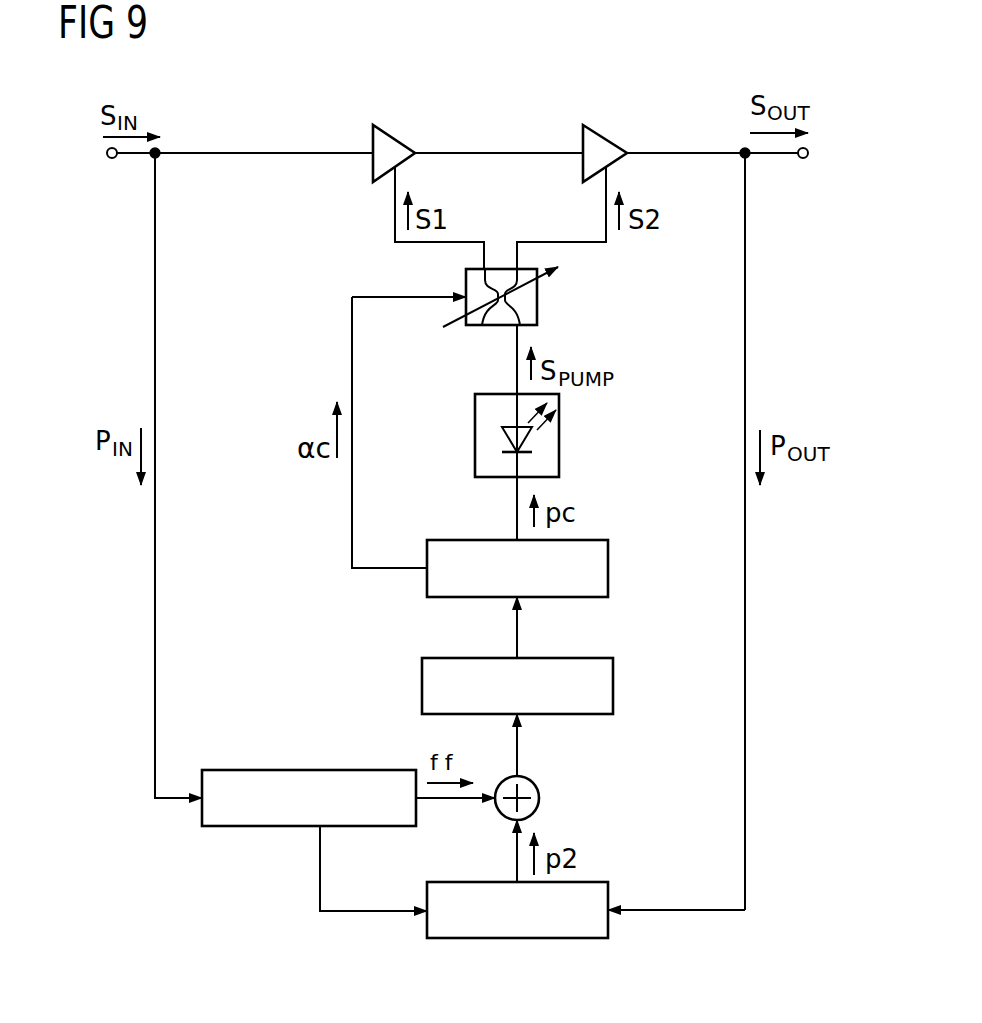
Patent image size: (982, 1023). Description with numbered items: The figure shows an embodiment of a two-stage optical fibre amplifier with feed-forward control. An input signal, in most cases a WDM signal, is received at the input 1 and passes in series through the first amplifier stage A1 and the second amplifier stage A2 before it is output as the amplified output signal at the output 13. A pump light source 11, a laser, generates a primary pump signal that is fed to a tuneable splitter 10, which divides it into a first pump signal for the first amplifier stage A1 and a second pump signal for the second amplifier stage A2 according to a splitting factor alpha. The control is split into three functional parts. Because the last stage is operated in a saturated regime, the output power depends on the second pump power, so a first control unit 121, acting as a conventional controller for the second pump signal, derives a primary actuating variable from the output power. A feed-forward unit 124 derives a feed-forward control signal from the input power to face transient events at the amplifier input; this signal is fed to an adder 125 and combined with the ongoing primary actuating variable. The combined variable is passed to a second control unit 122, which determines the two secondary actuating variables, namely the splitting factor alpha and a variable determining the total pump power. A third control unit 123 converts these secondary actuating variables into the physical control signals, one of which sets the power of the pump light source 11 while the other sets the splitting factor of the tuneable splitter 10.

The input 1 is at (107, 153).
The output 13 is at (808, 153).
The first amplifier stage A1 is at (396, 128).
The second amplifier stage A2 is at (608, 128).
The tuneable splitter 10 is at (539, 297).
The pump light source 11 is at (559, 435).
The third control unit 123 is at (608, 568).
The second control unit 122 is at (613, 686).
The adder 125 is at (539, 798).
The feed-forward unit 124 is at (273, 826).
The first control unit 121 is at (517, 938).